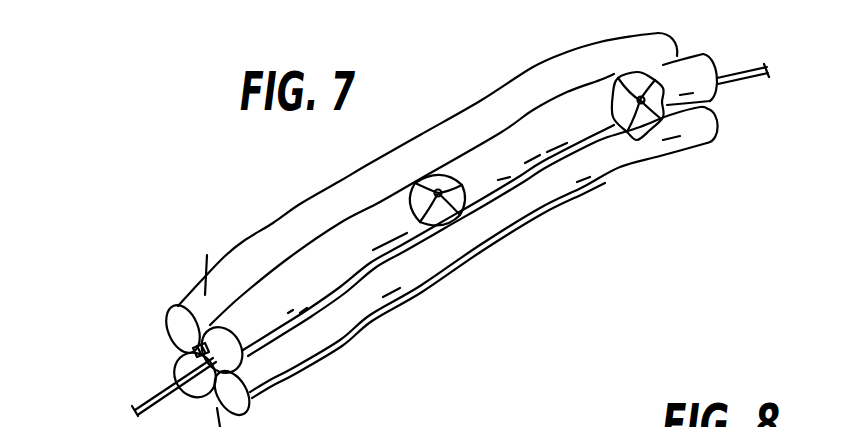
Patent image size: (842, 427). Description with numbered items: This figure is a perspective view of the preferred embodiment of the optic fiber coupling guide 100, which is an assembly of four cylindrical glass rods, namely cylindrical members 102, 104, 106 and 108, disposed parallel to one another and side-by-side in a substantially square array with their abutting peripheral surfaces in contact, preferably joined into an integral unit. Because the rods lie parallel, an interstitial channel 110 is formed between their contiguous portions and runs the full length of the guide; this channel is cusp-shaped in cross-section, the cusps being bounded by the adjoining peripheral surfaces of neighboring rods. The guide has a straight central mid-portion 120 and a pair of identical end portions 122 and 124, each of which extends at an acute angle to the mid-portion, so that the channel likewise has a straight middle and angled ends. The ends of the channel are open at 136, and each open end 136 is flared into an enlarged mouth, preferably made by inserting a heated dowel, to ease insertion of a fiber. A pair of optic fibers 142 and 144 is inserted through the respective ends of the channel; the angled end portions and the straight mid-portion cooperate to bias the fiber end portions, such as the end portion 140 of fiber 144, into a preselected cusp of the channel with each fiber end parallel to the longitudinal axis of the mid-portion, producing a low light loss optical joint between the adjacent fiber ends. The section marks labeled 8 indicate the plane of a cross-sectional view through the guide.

The section line 8- 8 is at (207, 257).
The optic fiber guide 100 is at (408, 132).
The cylindrical member 102 is at (342, 203).
The cylindrical member 104 is at (341, 266).
The cylindrical member 106 is at (593, 163).
The cylindrical member 108 is at (170, 352).
The interstitial channel 110 is at (428, 212).
The mid-portion 120 is at (471, 245).
The end portion 122 is at (268, 368).
The end portion 124 is at (693, 128).
The open end of channel 136 is at (178, 306).
The end portion of optic fiber 140 is at (450, 175).
The optic fiber 142 is at (158, 391).
The optic fiber 144 is at (753, 80).